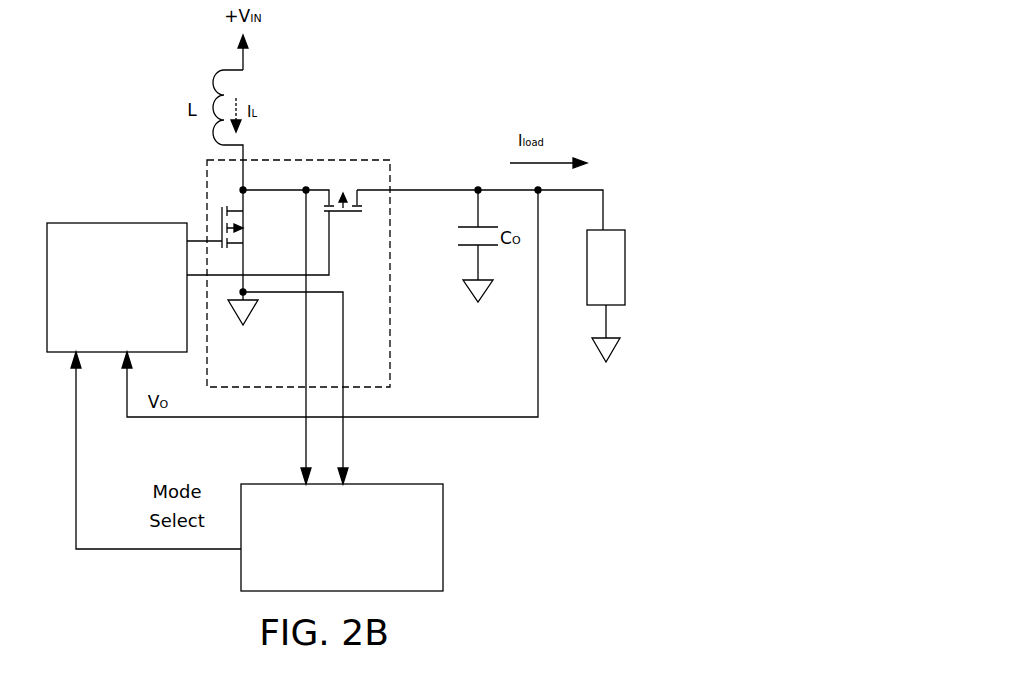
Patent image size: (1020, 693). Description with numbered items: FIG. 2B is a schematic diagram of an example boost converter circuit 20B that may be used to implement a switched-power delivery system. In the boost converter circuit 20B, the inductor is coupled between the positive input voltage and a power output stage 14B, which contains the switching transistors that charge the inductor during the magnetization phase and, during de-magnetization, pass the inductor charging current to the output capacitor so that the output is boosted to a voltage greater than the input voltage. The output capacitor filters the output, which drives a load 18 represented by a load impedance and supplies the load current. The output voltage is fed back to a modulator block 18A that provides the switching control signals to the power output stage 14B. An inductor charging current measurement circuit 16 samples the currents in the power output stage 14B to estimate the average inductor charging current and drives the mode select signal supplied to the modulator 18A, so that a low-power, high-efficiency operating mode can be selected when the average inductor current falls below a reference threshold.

The boost converter circuit 20B is at (543, 112).
The power output stage 14B is at (296, 158).
The modulator 18A is at (125, 220).
The inductor charging current measurement circuit 16 is at (391, 481).
The load 18 is at (627, 228).